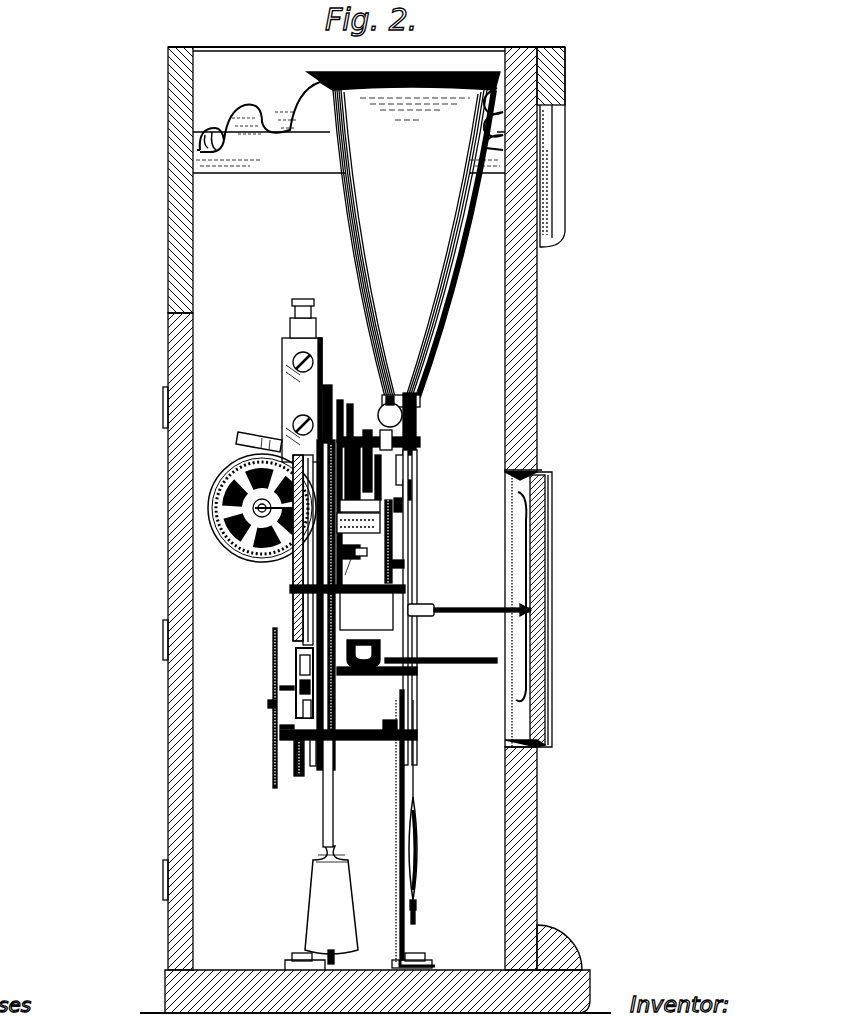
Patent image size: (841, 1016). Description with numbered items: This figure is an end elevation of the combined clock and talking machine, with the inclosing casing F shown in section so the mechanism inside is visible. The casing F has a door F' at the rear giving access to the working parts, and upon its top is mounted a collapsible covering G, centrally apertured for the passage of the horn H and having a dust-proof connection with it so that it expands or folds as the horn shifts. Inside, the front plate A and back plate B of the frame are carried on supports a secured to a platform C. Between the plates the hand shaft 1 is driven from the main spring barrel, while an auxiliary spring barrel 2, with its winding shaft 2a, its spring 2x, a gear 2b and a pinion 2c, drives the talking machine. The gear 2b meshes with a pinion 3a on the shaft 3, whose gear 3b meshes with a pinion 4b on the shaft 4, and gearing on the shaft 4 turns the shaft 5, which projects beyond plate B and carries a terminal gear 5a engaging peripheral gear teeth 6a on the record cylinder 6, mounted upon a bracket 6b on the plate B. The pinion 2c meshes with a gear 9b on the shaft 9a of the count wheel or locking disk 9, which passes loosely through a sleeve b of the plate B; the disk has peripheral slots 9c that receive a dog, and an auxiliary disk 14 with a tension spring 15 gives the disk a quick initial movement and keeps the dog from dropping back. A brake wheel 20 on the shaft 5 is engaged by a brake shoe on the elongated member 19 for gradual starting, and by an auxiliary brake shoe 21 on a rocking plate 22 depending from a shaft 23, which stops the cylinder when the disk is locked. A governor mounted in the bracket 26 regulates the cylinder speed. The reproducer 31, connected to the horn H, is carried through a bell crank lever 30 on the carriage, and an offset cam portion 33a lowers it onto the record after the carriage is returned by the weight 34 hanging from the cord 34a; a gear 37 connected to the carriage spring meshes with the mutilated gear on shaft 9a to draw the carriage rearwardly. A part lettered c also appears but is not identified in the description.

The inclosing casing F is at (346, 508).
The door F' is at (146, 598).
The covering G is at (300, 88).
The horn H is at (403, 239).
The back plate B is at (322, 372).
The bracket 26 is at (290, 328).
The bell crank lever 30 is at (322, 397).
The reproducer 31 is at (250, 434).
The offset cam portion 33a is at (335, 400).
The auxiliary brake shoe 21 is at (344, 428).
The weight 34 is at (330, 450).
The shaft 23 is at (416, 445).
The rocking plate 22 is at (372, 485).
The brake wheel 20 is at (395, 496).
The record cylinder 6 is at (245, 470).
The peripheral gear teeth 6a is at (238, 548).
The bracket 6b is at (285, 485).
The shaft 5 is at (357, 501).
The terminal gear 5a is at (296, 578).
The shaft 4 is at (364, 541).
The pinion 4b is at (417, 560).
The elongated member 19 is at (360, 568).
The front plate A is at (408, 697).
The hand shaft 1 is at (462, 614).
The auxiliary spring barrel 2 is at (385, 674).
The winding shaft 2a is at (452, 660).
The gear 2b is at (338, 716).
The pinion 2c is at (348, 627).
The spring 2x is at (383, 624).
The cup c is at (363, 642).
The shaft 3 is at (366, 611).
The pinion 3a is at (355, 606).
The gear 3b is at (408, 630).
The count wheel or locking disk 9 is at (272, 653).
The shaft 9a is at (268, 708).
The gear 9b is at (338, 688).
The peripheral slots 9c is at (273, 758).
The sleeve b is at (338, 706).
The tension spring 15 is at (280, 693).
The auxiliary disk 14 is at (280, 727).
The gear 37 is at (314, 768).
The cord 34a is at (333, 800).
The supports a is at (405, 784).
The platform C is at (249, 985).